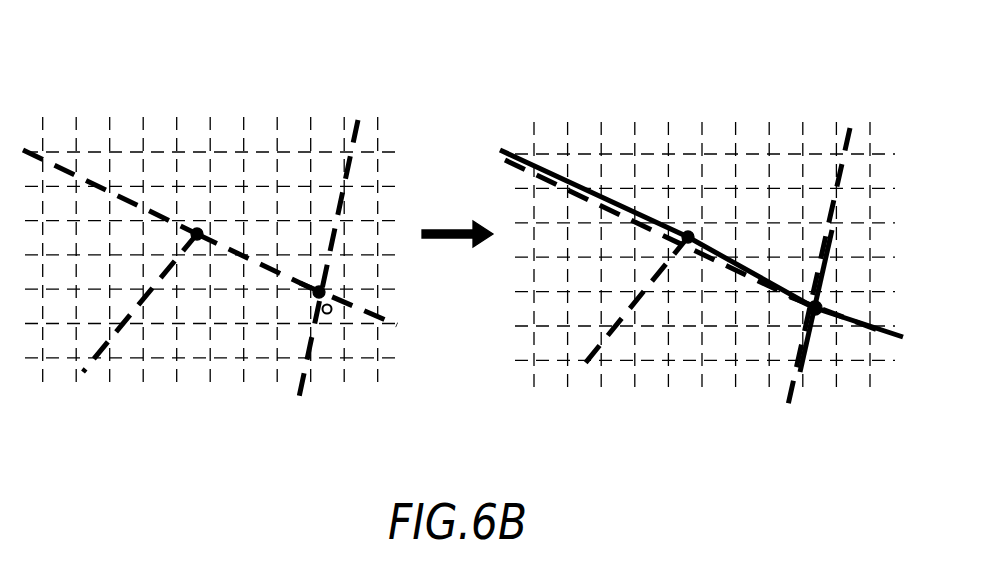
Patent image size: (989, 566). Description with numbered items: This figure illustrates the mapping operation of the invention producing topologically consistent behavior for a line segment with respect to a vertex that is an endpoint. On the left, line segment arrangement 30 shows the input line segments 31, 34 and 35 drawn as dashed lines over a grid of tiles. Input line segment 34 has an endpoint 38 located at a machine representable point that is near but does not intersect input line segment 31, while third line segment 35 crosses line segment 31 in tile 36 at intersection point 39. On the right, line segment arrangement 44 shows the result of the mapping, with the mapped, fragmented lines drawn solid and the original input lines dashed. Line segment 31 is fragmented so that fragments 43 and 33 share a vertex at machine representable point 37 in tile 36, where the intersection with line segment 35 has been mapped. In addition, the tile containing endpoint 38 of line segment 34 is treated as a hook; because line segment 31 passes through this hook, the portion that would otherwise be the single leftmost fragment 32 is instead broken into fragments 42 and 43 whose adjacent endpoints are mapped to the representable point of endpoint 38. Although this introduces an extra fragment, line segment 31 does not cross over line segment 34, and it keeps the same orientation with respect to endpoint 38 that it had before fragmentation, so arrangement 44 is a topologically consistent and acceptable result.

The line segment arrangement 30 is at (252, 95).
The input line segment 31 is at (64, 172).
The line segment fragment 32 is at (553, 181).
The line segment fragment 33 is at (840, 324).
The input line segment 34 is at (98, 362).
The third line segment 35 is at (350, 167).
The tile 36 is at (303, 302).
The machine representable point 37 is at (327, 314).
The endpoint 38 is at (197, 240).
The intersection point 39 is at (325, 290).
The line segment fragment 42 is at (630, 207).
The line segment fragment 43 is at (756, 260).
The line segment arrangement 44 is at (685, 96).